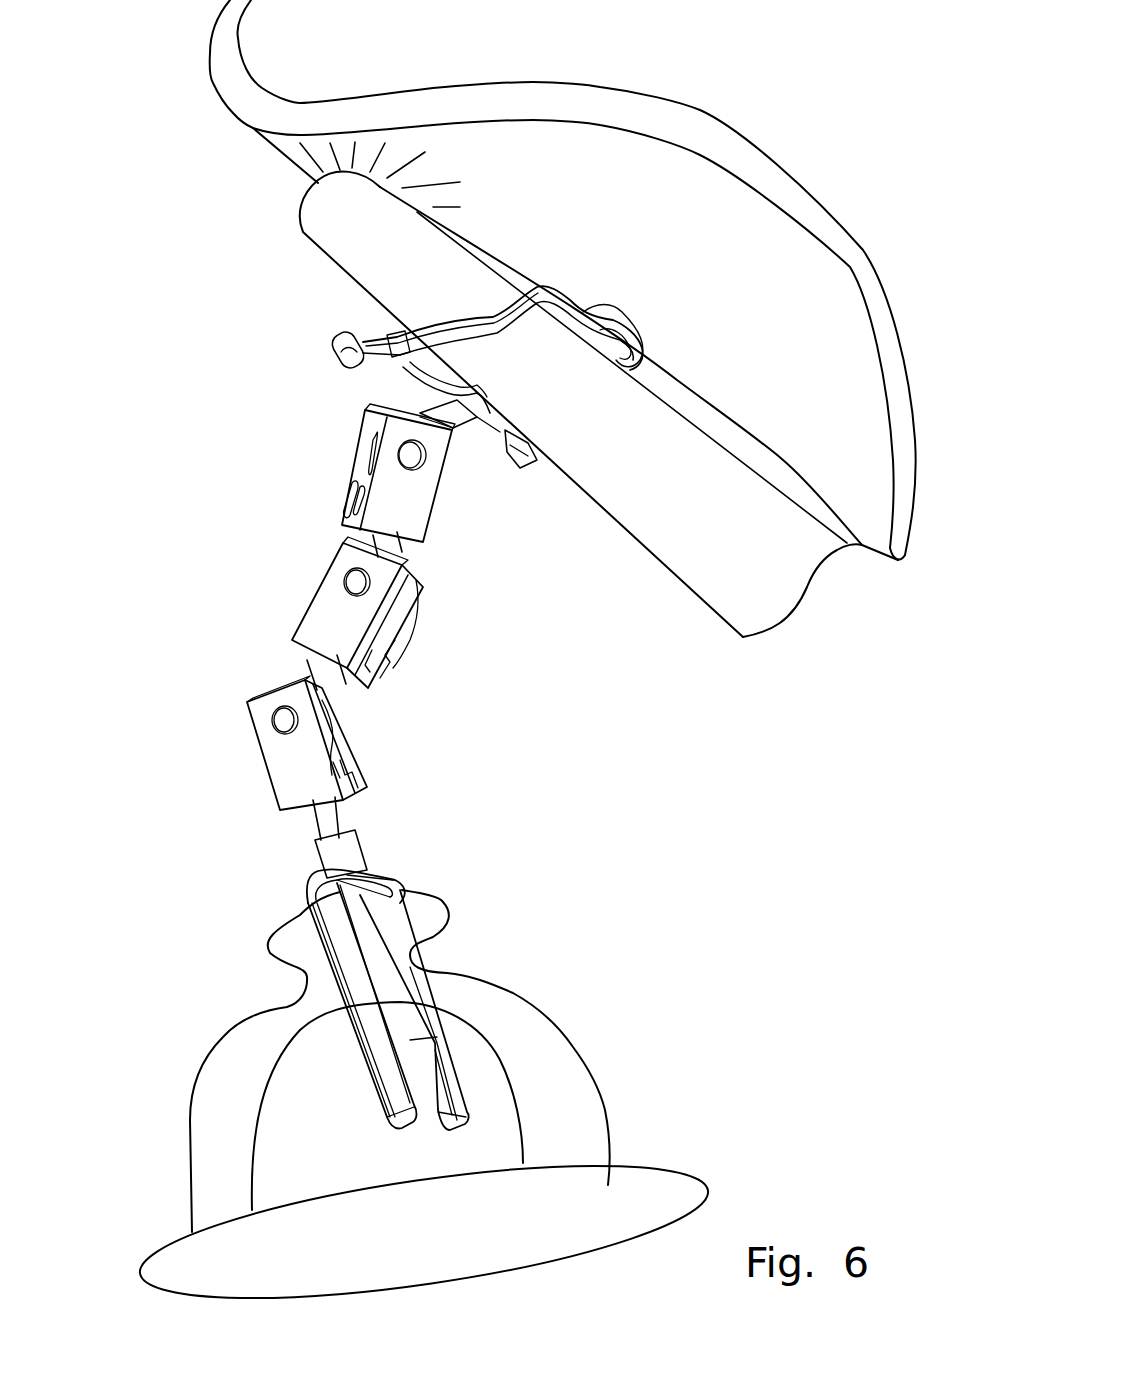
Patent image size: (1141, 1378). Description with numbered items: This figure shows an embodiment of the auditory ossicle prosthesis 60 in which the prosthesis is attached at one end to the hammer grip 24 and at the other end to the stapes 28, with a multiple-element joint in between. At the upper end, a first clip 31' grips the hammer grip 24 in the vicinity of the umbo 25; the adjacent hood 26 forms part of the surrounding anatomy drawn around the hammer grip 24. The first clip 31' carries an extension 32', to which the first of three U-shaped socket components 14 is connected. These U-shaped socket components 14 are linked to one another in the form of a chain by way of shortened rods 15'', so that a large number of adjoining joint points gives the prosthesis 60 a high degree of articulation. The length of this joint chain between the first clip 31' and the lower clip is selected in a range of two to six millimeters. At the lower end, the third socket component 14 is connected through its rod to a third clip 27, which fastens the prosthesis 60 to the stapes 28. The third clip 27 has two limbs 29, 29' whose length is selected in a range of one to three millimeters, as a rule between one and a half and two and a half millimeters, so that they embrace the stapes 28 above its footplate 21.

The hood 26 is at (515, 145).
The light source 25 is at (347, 183).
The handle 24 is at (772, 580).
The clamp strap 31' is at (460, 347).
The bracket 32' is at (416, 416).
The holder assembly 60 is at (237, 448).
The articulated link blocks 14 is at (405, 483).
The joint shafts 15'' is at (496, 693).
The clamp 27 is at (365, 878).
The pedestal 28 is at (513, 1010).
The clamp arm 29 is at (355, 1021).
The clamp arm 29' is at (507, 1010).
The base 21 is at (652, 1188).